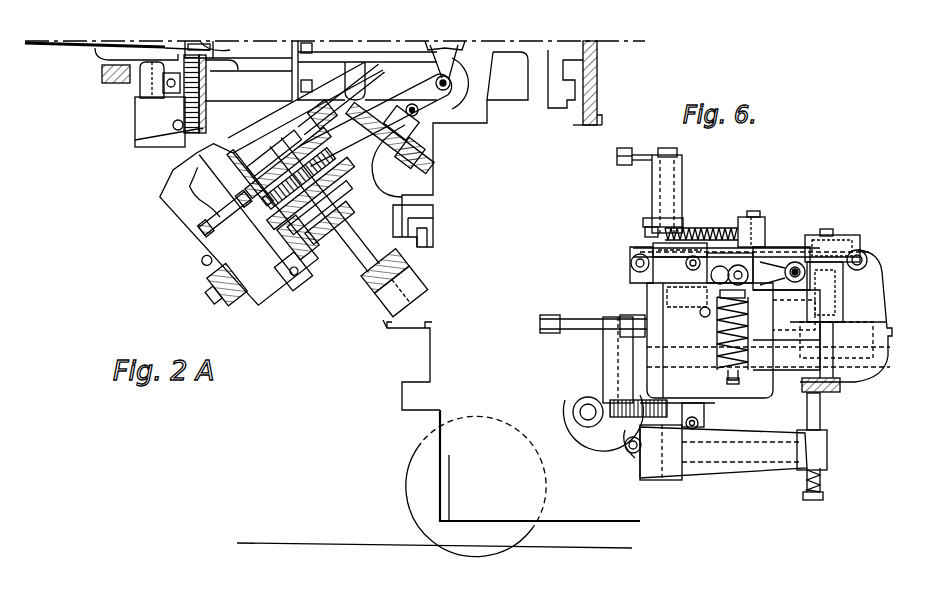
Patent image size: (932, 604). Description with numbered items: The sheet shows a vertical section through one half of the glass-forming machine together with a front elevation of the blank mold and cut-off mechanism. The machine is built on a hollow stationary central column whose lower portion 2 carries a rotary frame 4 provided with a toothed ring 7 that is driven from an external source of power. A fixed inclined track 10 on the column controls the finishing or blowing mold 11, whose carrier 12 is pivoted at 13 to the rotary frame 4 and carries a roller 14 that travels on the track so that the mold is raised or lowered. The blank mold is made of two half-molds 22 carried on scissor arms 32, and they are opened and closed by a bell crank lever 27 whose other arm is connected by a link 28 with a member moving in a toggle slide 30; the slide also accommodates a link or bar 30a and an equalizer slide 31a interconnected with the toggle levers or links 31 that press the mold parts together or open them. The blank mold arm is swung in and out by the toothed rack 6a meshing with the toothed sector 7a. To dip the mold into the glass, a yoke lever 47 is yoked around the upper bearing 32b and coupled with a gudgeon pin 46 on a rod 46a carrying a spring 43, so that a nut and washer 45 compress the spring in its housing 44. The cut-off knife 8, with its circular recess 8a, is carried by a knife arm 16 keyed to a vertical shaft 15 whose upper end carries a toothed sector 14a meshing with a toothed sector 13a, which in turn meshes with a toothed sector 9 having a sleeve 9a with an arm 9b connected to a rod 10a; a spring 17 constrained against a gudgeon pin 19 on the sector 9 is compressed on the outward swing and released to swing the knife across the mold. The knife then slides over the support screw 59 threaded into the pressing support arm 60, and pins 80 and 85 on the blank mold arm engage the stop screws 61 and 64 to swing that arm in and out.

In FIG. 2A, the lower portion of the central column 2 is at (433, 378).
In FIG. 2A, the rotary frame 4 is at (424, 147).
In FIG. 6, the toothed rack 6a is at (584, 422).
In FIG. 2A, the toothed ring 7 is at (102, 72).
In FIG. 6, the toothed sector 7a is at (627, 423).
In FIG. 2A, the cut-off knife 8 is at (104, 84).
In FIG. 6, the cut-off knife 8 is at (838, 390).
In FIG. 2A, the circular recess 8a is at (200, 64).
In FIG. 6, the toothed sector 9 is at (706, 232).
In FIG. 6, the sleeve 9a is at (684, 158).
In FIG. 6, the arm 9b is at (651, 153).
In FIG. 2A, the fixed inclined track 10 is at (413, 320).
In FIG. 6, the rod 10a is at (617, 156).
In FIG. 2A, the finishing or blowing mold 11 is at (180, 216).
In FIG. 2A, the carrier 12 is at (396, 152).
In FIG. 2A, the pivot 13 is at (452, 85).
In FIG. 6, the toothed sector 13a is at (780, 247).
In FIG. 2A, the roller 14 is at (383, 320).
In FIG. 6, the toothed sector 14a is at (805, 258).
In FIG. 6, the vertical shaft 15 is at (833, 231).
In FIG. 2A, the knife arm 16 is at (42, 47).
In FIG. 6, the knife arm 16 is at (828, 393).
In FIG. 6, the spring 17 is at (689, 228).
In FIG. 6, the gudgeon pin 19 is at (648, 222).
In FIG. 2A, the half-mold 22 is at (209, 51).
In FIG. 6, the half-mold 22 is at (860, 383).
In FIG. 6, the bell crank lever 27 is at (580, 322).
In FIG. 6, the link 28 is at (660, 328).
In FIG. 6, the toggle slide 30 is at (650, 300).
In FIG. 6, the link or bar 30a is at (603, 350).
In FIG. 6, the toggle levers or links 31 is at (764, 355).
In FIG. 6, the equalizer slide 31a is at (585, 380).
In FIG. 6, the scissor arms 32 is at (874, 266).
In FIG. 6, the upper bearing 32b is at (877, 262).
In FIG. 6, the spring 43 is at (745, 365).
In FIG. 6, the housing 44 is at (742, 388).
In FIG. 6, the nut and washer 45 is at (732, 362).
In FIG. 6, the gudgeon pin 46 is at (722, 266).
In FIG. 6, the rod 46a is at (705, 288).
In FIG. 6, the yoke lever 47 is at (791, 264).
In FIG. 2A, the support screw 59 is at (205, 88).
In FIG. 6, the support screw 59 is at (813, 424).
In FIG. 2A, the pressing support arm 60 is at (138, 141).
In FIG. 6, the pressing support arm 60 is at (752, 458).
In FIG. 2A, the stop screw 61 is at (166, 88).
In FIG. 6, the stop screw 64 is at (633, 452).
In FIG. 2A, the pin 80 is at (150, 78).
In FIG. 6, the pin 80 is at (695, 443).
In FIG. 6, the pin 85 is at (674, 437).